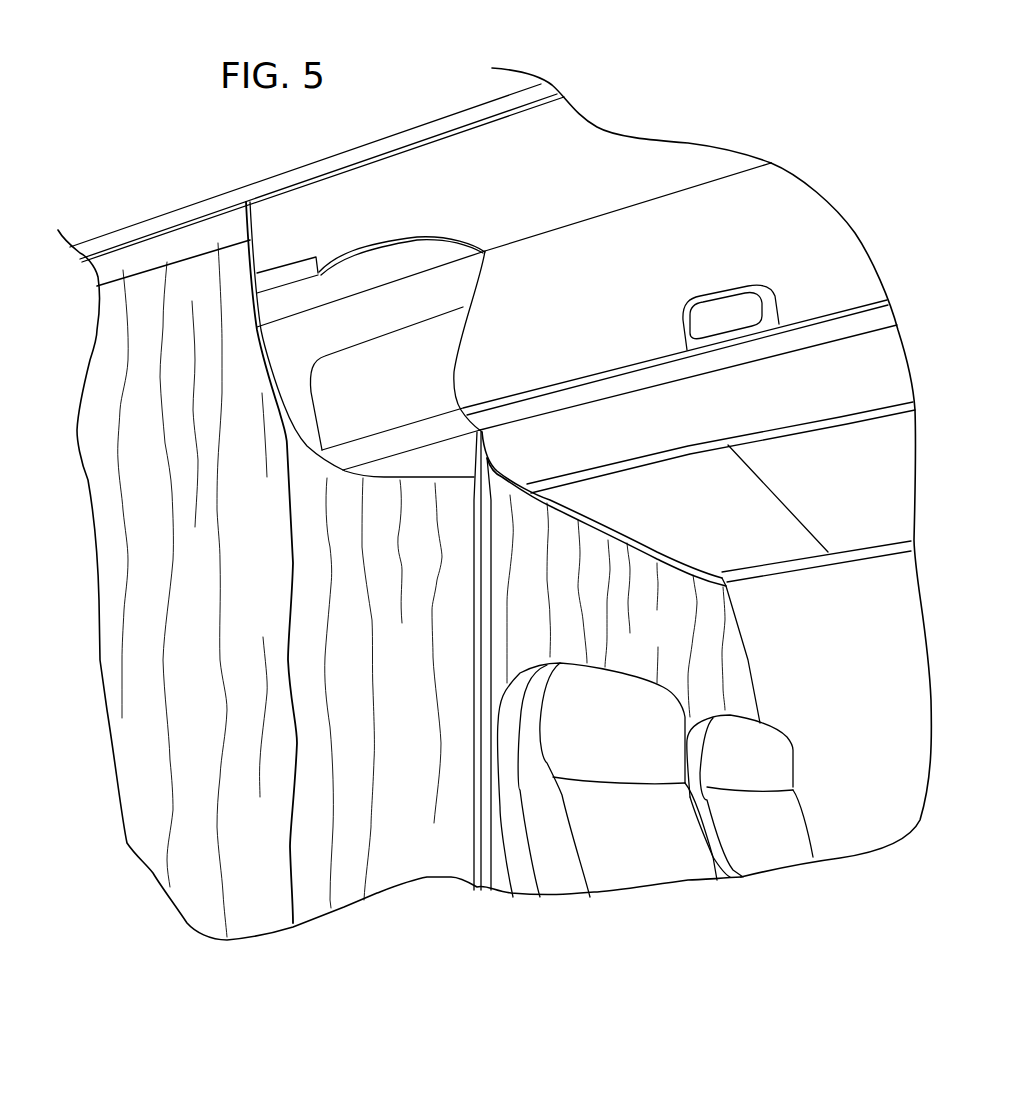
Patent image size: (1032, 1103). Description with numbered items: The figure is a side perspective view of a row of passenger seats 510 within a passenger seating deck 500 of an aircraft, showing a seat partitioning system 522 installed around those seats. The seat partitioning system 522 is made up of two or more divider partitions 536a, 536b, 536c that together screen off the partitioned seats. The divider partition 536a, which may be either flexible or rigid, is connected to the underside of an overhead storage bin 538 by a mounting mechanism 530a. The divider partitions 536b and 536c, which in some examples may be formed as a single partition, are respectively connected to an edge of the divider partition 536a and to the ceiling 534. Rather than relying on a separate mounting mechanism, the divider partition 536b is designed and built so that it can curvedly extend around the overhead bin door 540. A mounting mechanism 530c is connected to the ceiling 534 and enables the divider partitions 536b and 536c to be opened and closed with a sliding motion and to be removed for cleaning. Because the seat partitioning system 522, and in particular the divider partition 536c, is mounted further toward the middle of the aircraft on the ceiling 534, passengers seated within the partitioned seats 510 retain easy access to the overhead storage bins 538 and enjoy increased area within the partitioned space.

The passenger seating deck 500 is at (787, 79).
The passenger seats 510 is at (677, 867).
The seat partitioning system 522 is at (156, 174).
The mounting mechanism 530a is at (700, 562).
The mounting mechanism 530c is at (124, 262).
The ceiling 534 is at (122, 214).
The divider partition 536a is at (679, 641).
The divider partition 536b is at (424, 729).
The divider partition 536c is at (268, 548).
The overhead storage bin 538 is at (711, 487).
The overhead bin door 540 is at (318, 262).